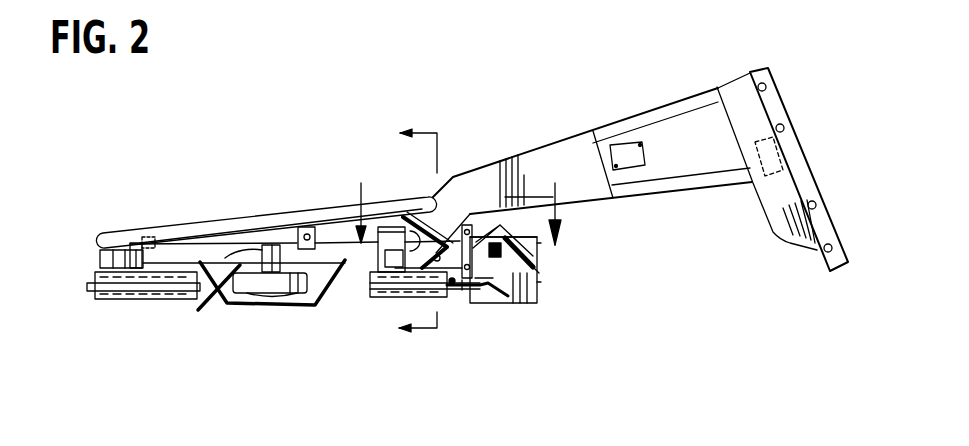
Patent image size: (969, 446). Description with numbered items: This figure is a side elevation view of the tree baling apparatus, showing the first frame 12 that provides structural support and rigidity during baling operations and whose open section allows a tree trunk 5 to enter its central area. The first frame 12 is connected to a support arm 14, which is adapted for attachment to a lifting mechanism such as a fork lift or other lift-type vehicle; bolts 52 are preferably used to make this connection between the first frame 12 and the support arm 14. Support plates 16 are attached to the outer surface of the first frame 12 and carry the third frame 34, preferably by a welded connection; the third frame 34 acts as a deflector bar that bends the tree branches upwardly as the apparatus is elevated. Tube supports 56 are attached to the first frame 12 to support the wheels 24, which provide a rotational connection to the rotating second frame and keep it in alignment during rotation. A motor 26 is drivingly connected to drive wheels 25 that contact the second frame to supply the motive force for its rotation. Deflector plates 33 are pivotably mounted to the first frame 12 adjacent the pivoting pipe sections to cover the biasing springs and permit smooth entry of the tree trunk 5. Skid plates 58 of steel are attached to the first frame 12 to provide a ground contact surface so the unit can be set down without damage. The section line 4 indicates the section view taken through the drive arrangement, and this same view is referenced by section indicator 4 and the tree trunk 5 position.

The section line 4- 4 is at (432, 231).
The tree trunk 5 is at (457, 200).
The first frame 12 is at (175, 247).
The support arm 14 is at (548, 152).
The support plates 16 is at (300, 222).
The wheels 24 is at (113, 300).
The drive wheels 25 is at (392, 300).
The motor 26 is at (372, 275).
The deflector plates 33 is at (100, 262).
The third frame 34 is at (220, 218).
The bolts 52 is at (397, 227).
The tube supports 56 is at (200, 312).
The skid plates 58 is at (262, 309).